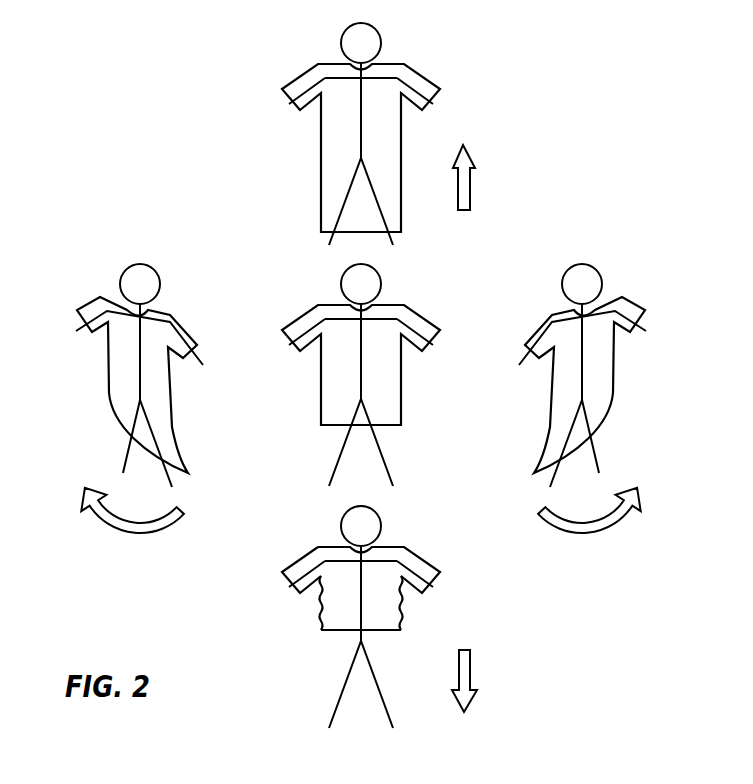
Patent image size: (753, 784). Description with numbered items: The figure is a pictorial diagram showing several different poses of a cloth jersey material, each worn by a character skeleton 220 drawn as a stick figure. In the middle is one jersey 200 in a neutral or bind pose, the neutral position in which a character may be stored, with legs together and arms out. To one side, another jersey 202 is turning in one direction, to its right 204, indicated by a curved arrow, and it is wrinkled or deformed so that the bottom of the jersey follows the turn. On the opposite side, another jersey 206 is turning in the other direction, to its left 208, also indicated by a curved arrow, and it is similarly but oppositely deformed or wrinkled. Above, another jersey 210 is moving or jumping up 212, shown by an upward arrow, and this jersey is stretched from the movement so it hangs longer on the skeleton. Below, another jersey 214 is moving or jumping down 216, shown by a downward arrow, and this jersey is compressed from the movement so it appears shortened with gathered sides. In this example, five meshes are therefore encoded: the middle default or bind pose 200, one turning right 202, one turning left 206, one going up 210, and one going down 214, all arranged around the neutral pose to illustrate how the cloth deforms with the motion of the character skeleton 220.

The jersey 200 is at (402, 405).
The jersey 202 is at (108, 392).
The right turn 204 is at (108, 517).
The jersey 206 is at (615, 392).
The left turn 208 is at (614, 517).
The jersey 210 is at (321, 173).
The upward movement 212 is at (470, 193).
The jersey 214 is at (403, 620).
The downward movement 216 is at (473, 672).
The character skeleton 220 is at (361, 143).